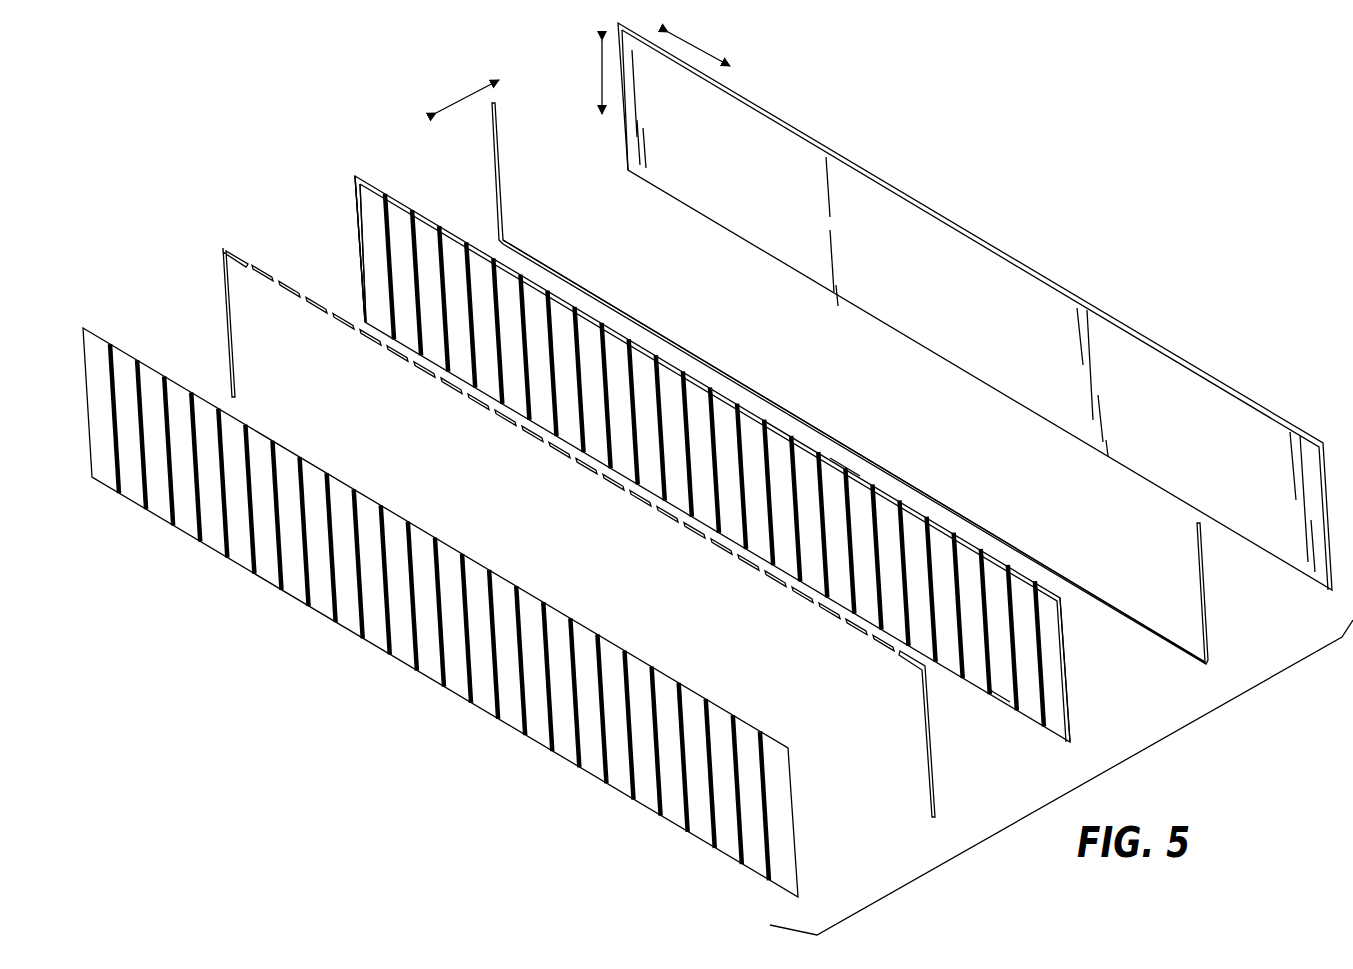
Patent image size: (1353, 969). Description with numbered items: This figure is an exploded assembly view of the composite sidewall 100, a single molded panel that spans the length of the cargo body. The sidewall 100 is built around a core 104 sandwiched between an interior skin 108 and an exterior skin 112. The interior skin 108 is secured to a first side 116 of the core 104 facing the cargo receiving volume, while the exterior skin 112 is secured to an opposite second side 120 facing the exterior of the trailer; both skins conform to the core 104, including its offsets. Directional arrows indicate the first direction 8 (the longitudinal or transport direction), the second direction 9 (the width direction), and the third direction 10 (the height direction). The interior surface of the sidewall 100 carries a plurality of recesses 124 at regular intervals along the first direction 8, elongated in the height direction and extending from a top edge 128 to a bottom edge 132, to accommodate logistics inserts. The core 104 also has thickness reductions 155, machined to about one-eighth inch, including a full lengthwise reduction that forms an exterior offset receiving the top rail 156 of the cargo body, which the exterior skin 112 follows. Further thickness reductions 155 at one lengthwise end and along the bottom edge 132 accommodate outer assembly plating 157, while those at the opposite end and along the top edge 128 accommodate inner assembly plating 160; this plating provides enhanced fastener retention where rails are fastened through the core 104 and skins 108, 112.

The sidewall 100 is at (224, 96).
The core 104 is at (706, 450).
The interior skin 108 is at (95, 347).
The exterior skin 112 is at (975, 306).
The first side 116 is at (373, 248).
The second side 120 is at (420, 212).
The recess 124 is at (850, 389).
The top edge 128 is at (370, 182).
The bottom edge 132 is at (579, 532).
The thickness reduction 155 is at (362, 298).
The top rail 156 is at (950, 220).
The outer assembly plating 157 is at (1108, 605).
The inner assembly plating 160 is at (778, 592).
The first direction 8 is at (698, 46).
The second direction 9 is at (473, 96).
The third direction 10 is at (602, 73).